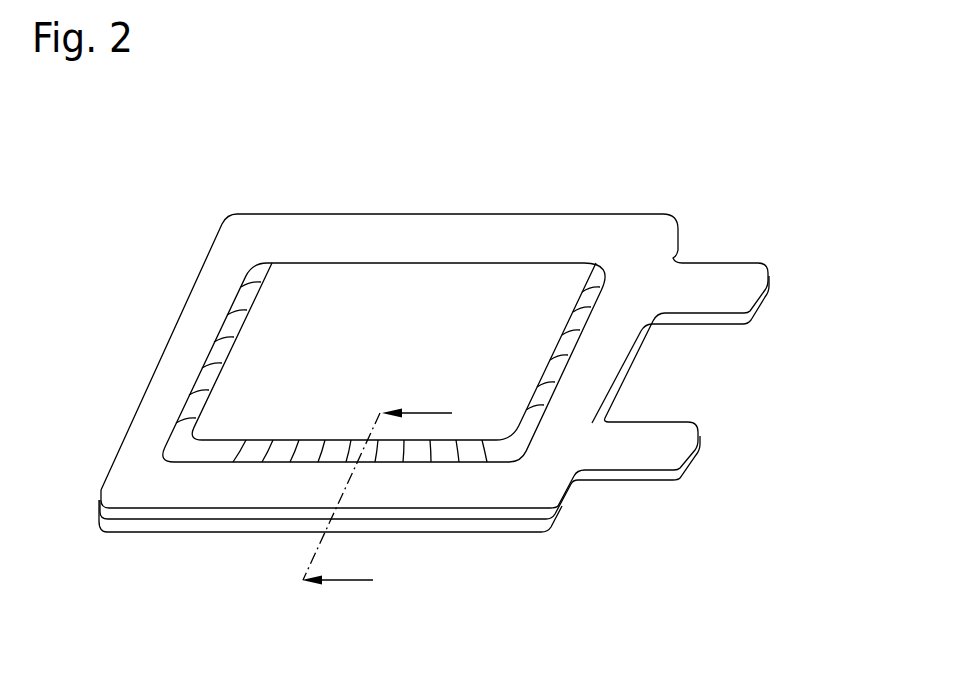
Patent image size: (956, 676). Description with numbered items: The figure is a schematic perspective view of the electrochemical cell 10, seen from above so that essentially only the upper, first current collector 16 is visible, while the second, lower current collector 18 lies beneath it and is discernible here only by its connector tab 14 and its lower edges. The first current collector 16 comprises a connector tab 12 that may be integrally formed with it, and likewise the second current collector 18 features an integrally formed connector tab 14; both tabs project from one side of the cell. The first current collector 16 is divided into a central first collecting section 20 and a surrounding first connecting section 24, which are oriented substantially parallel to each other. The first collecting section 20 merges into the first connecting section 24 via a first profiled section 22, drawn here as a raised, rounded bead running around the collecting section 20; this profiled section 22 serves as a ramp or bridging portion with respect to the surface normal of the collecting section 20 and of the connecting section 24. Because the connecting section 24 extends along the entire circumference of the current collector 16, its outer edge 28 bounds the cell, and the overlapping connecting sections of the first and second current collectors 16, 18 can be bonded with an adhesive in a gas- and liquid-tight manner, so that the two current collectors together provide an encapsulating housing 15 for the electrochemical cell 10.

The electrochemical cell 10 is at (381, 148).
The connector tab 12 is at (718, 275).
The connector tab 14 is at (673, 437).
The housing 15 is at (220, 178).
The current collector 16 is at (506, 262).
The current collector 18 is at (443, 545).
The collecting section 20 is at (390, 280).
The profiled section 22 is at (217, 452).
The connecting section 24 is at (328, 247).
The edge 28 is at (596, 205).